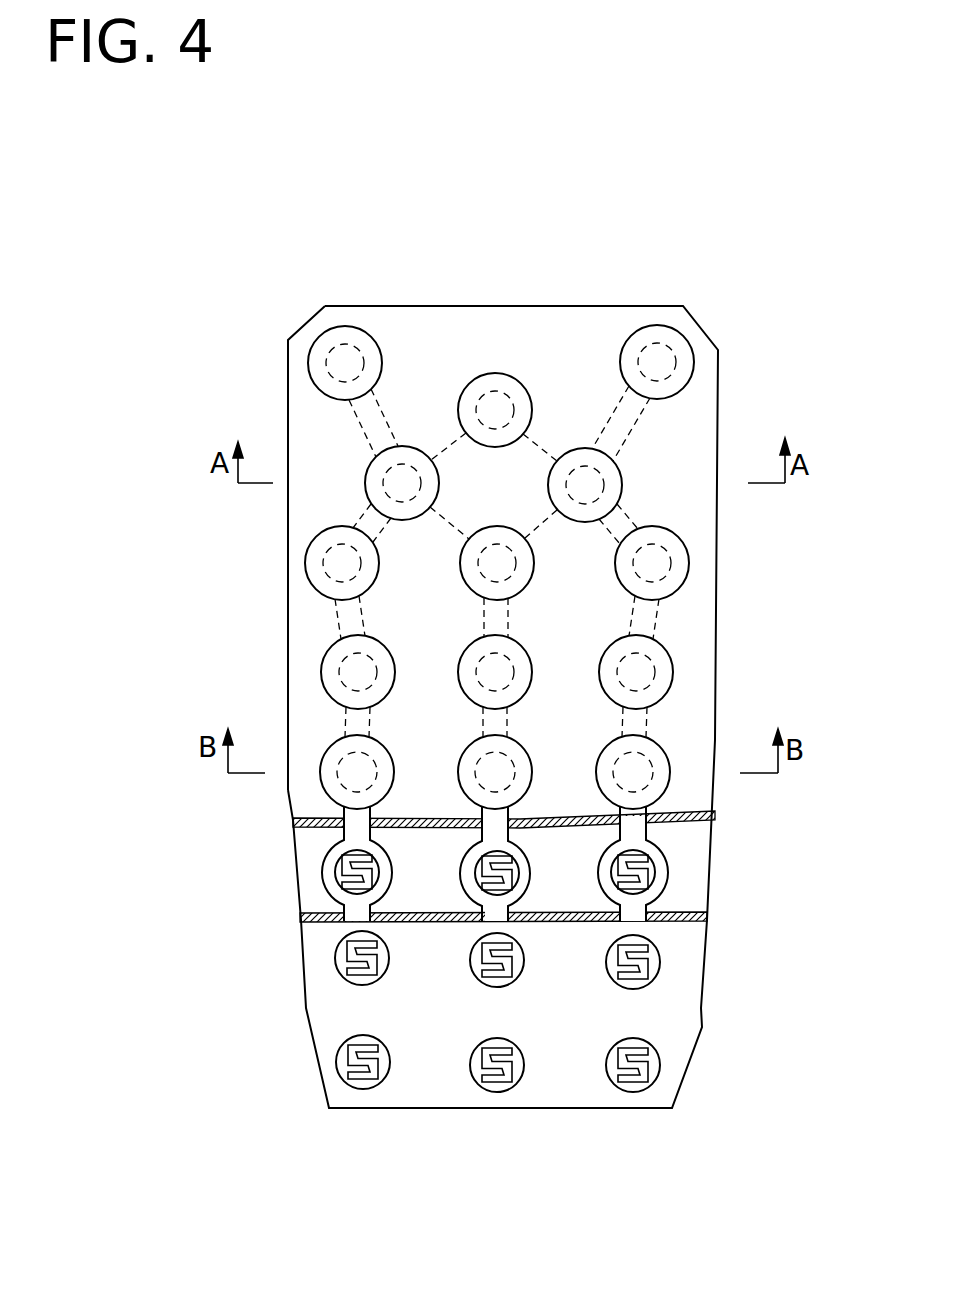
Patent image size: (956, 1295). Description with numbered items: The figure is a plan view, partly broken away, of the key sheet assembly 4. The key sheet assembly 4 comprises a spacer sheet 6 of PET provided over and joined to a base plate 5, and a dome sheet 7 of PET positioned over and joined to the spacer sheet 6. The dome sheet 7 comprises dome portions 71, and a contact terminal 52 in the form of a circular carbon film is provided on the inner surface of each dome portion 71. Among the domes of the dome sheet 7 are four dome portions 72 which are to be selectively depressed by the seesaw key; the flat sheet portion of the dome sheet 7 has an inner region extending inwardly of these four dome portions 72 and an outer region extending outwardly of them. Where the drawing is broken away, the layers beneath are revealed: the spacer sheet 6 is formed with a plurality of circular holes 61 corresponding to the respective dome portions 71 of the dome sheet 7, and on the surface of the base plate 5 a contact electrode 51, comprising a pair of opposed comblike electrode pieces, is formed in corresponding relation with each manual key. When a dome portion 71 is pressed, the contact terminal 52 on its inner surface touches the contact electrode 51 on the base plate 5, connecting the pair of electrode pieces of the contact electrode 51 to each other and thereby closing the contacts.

The key sheet assembly 4 is at (583, 306).
The base plate 5 is at (315, 1010).
The contact electrode 51 is at (340, 1068).
The contact terminal 52 is at (672, 344).
The spacer sheet 6 is at (308, 855).
The circular hole 61 is at (330, 892).
The dome sheet 7 is at (396, 318).
The dome portion 71 is at (663, 775).
The dome portion 72 is at (494, 374).